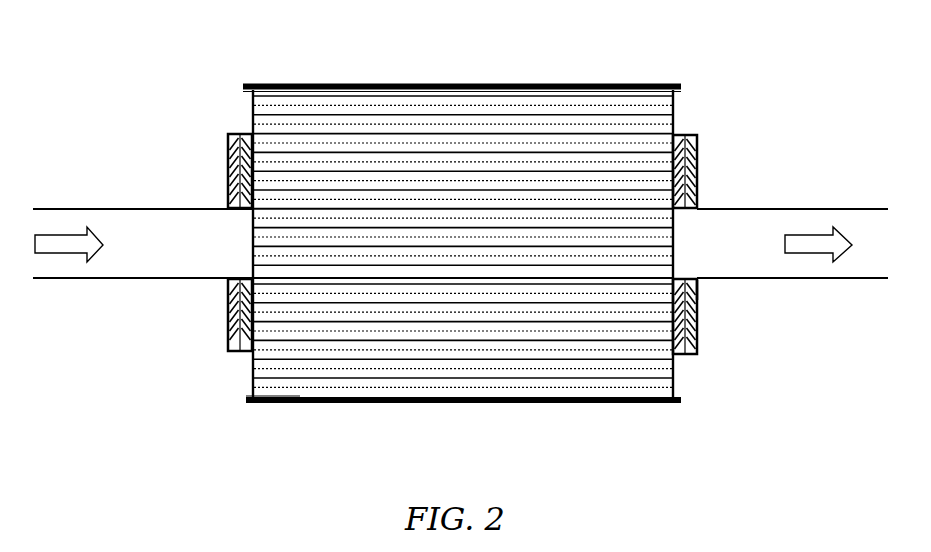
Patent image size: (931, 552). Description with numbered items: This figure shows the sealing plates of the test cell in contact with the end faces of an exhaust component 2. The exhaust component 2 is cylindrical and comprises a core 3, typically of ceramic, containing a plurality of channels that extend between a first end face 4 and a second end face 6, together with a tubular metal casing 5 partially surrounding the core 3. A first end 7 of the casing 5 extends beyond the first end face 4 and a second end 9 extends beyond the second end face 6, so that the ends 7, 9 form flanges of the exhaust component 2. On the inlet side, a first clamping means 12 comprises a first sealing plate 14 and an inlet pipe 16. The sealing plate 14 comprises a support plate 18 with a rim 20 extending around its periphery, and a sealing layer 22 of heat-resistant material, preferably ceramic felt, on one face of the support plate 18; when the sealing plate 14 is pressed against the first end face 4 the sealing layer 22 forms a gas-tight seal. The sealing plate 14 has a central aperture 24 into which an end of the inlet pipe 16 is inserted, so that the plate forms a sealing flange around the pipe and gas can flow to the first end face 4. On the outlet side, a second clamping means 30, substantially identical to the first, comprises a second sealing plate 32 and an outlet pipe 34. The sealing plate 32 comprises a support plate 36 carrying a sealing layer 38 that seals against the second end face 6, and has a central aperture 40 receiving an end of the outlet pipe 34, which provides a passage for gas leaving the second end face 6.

The exhaust component 2 is at (439, 241).
The core 3 is at (592, 363).
The first end face 4 is at (246, 122).
The casing 5 is at (437, 83).
The second end face 6 is at (511, 410).
The first end 7 is at (247, 358).
The second end 9 is at (685, 90).
The first clamping means 12 is at (157, 310).
The first sealing plate 14 is at (225, 353).
The inlet pipe 16 is at (143, 208).
The support plate 18 is at (201, 166).
The rim 20 is at (473, 271).
The sealing layer 22 is at (233, 185).
The central aperture 24 is at (207, 345).
The second clamping means 30 is at (746, 184).
The second sealing plate 32 is at (702, 140).
The outlet pipe 34 is at (843, 208).
The support plate 36 is at (698, 340).
The sealing layer 38 is at (763, 324).
The central aperture 40 is at (700, 282).